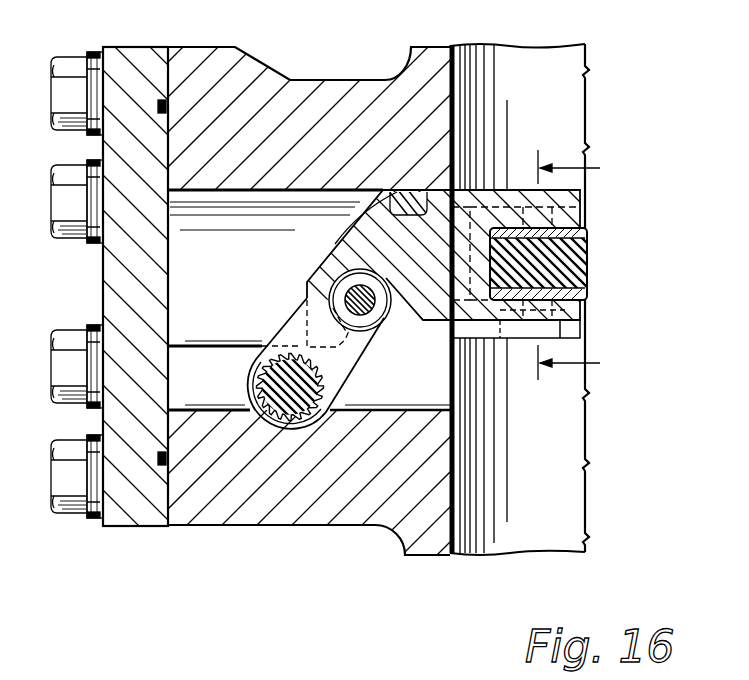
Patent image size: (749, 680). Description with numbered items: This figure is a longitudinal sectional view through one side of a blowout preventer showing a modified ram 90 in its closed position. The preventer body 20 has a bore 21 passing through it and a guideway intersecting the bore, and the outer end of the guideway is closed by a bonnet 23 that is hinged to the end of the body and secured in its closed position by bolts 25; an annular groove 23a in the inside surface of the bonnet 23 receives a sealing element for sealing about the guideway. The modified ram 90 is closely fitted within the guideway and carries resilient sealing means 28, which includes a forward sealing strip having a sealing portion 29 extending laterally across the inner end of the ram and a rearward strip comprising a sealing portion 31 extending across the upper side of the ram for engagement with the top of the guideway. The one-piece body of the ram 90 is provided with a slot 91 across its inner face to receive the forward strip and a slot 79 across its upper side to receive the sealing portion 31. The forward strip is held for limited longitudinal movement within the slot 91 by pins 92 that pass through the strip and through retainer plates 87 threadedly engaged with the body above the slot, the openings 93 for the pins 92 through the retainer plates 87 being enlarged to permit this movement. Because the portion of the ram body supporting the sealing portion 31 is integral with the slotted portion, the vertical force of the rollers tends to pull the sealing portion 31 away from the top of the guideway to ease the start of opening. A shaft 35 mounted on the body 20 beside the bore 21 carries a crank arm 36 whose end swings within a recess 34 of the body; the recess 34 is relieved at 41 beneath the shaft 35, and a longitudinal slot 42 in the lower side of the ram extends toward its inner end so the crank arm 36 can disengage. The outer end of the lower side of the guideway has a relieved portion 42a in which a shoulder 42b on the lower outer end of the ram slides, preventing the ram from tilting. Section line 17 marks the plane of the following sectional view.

The section line 17- 17 is at (596, 268).
The body 20 is at (350, 76).
The bore 21 is at (460, 92).
The bonnet 23 is at (103, 273).
The annular groove 23a is at (167, 107).
The bolts 25 is at (58, 513).
The resilient sealing means 28 is at (600, 293).
The sealing portion 29 is at (588, 252).
The sealing portion 31 is at (456, 152).
The recess 34 is at (397, 410).
The shaft 35 is at (323, 377).
The crank arm 36 is at (256, 371).
The relieved portion 41 is at (247, 420).
The longitudinal slot 42 is at (500, 340).
The relieved portion 42a is at (215, 342).
The shoulder 42b is at (283, 343).
The slot 79 is at (337, 243).
The retainer plates 87 is at (587, 232).
The modified ram 90 is at (298, 295).
The slot 91 is at (589, 287).
The pins 92 is at (575, 208).
The openings 93 is at (585, 324).